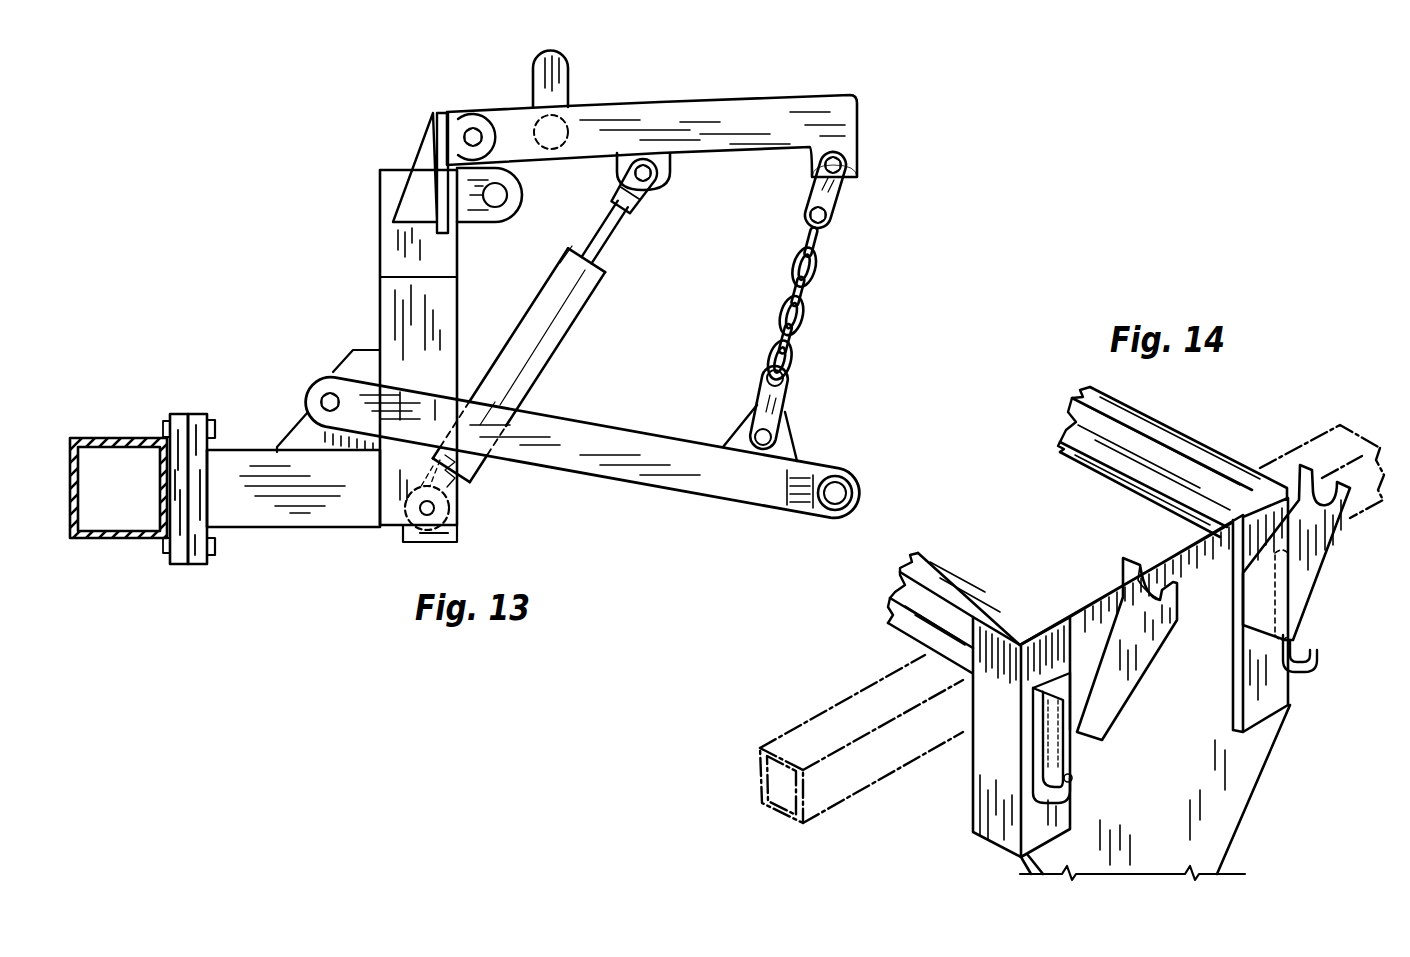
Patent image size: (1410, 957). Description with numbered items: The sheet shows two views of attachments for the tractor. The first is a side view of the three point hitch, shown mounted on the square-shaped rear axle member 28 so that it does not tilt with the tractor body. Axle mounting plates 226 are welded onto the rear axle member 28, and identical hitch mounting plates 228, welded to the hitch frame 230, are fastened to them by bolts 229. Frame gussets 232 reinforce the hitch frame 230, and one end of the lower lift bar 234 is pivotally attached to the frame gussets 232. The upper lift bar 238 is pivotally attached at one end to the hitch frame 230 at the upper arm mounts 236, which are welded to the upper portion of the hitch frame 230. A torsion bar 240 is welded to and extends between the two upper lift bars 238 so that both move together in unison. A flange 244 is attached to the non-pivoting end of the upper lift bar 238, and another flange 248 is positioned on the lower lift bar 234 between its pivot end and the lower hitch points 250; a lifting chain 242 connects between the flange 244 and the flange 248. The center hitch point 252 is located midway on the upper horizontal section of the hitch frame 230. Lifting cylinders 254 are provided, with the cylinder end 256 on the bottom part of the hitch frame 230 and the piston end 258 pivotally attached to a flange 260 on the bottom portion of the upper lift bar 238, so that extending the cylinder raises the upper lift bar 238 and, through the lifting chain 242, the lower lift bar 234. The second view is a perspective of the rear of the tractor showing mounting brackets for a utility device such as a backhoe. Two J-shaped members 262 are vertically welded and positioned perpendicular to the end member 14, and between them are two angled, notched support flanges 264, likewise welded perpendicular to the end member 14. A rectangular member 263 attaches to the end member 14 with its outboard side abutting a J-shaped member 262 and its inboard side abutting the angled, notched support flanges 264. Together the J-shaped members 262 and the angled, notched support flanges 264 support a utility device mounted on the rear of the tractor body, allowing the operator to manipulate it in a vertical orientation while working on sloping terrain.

In FIG. 13, the rear axle member 28 is at (128, 438).
In FIG. 13, the axle mounting plates 226 is at (177, 566).
In FIG. 13, the hitch mounting plates 228 is at (195, 566).
In FIG. 13, the bolts 229 is at (217, 430).
In FIG. 13, the hitch frame 230 is at (305, 523).
In FIG. 13, the frame gussets 232 is at (348, 368).
In FIG. 13, the lower lift bar 234 is at (643, 487).
In FIG. 13, the upper arm mounts 236 is at (467, 118).
In FIG. 13, the upper lift bar 238 is at (755, 95).
In FIG. 13, the torsion bar 240 is at (568, 72).
In FIG. 13, the lifting chain 242 is at (823, 269).
In FIG. 13, the flange 244 is at (862, 156).
In FIG. 13, the flange 248 is at (788, 440).
In FIG. 13, the lower hitch points 250 is at (837, 483).
In FIG. 13, the center hitch point 252 is at (508, 195).
In FIG. 13, the lifting cylinders 254 is at (568, 345).
In FIG. 13, the cylinder end 256 is at (457, 512).
In FIG. 13, the piston end 258 is at (672, 173).
In FIG. 13, the flange 260 is at (665, 190).
In FIG. 14, the end member 14 is at (1223, 785).
In FIG. 14, the J-shaped members 262 is at (1076, 778).
In FIG. 14, the rectangular member 263 is at (1067, 737).
In FIG. 14, the angled, notched support flanges 264 is at (1157, 650).